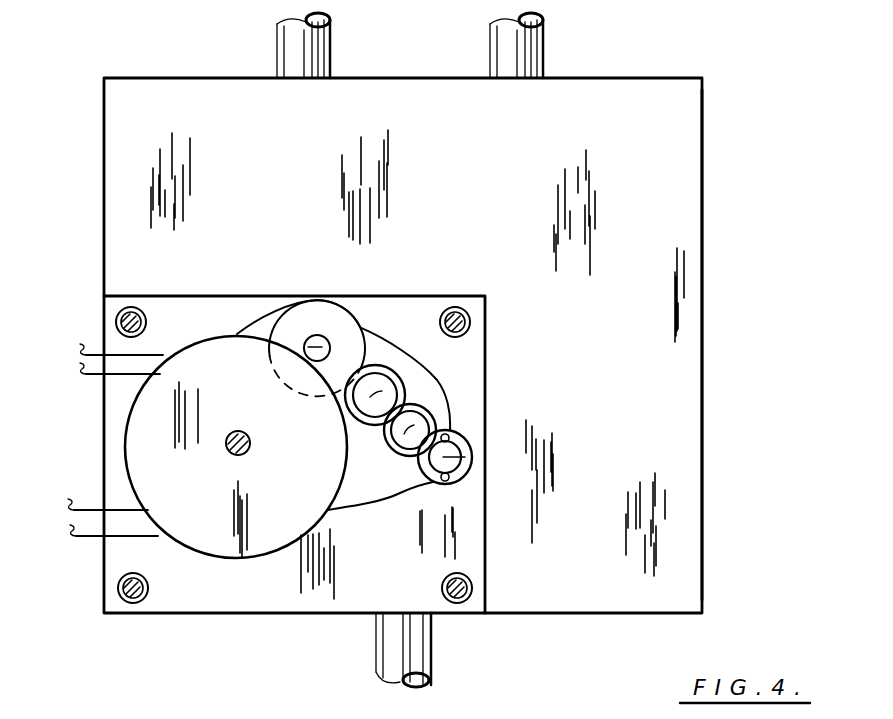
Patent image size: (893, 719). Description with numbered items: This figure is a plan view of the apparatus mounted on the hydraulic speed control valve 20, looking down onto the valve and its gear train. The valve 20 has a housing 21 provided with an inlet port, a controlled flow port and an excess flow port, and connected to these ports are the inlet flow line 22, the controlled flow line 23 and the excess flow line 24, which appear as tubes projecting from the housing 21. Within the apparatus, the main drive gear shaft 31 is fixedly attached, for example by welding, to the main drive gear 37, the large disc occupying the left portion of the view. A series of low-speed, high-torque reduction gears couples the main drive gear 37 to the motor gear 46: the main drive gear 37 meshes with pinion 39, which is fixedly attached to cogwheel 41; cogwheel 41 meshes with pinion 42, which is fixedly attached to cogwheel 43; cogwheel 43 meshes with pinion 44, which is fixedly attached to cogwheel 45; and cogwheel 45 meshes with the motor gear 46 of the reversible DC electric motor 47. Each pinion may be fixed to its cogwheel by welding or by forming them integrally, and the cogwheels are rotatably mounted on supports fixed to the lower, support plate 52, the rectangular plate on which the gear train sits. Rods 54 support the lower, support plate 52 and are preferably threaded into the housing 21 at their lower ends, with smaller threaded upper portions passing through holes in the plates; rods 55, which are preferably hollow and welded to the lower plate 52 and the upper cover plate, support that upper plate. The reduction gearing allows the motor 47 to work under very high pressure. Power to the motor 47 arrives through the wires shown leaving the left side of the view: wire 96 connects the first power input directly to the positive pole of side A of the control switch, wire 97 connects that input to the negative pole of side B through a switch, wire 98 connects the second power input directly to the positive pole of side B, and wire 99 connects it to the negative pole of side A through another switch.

The hydraulic speed control valve 20 is at (683, 182).
The housing 21 is at (690, 128).
The inlet flow line 22 is at (415, 647).
The controlled flow line 23 is at (312, 58).
The excess flow line 24 is at (530, 50).
The main drive gear shaft 31 is at (251, 445).
The main drive gear 37 is at (267, 533).
The pinion 39 is at (358, 330).
The cogwheel 41 is at (352, 345).
The pinion 42 is at (378, 392).
The cogwheel 43 is at (390, 358).
The pinion 44 is at (398, 455).
The cogwheel 45 is at (412, 430).
The motor gear 46 is at (457, 457).
The reversible DC electric motor 47 is at (460, 467).
The lower support plate 52 is at (467, 348).
The rods 54 is at (140, 309).
The rods 55 is at (148, 325).
The wire 96 is at (92, 536).
The wire 97 is at (92, 510).
The wire 98 is at (90, 355).
The wire 99 is at (86, 374).